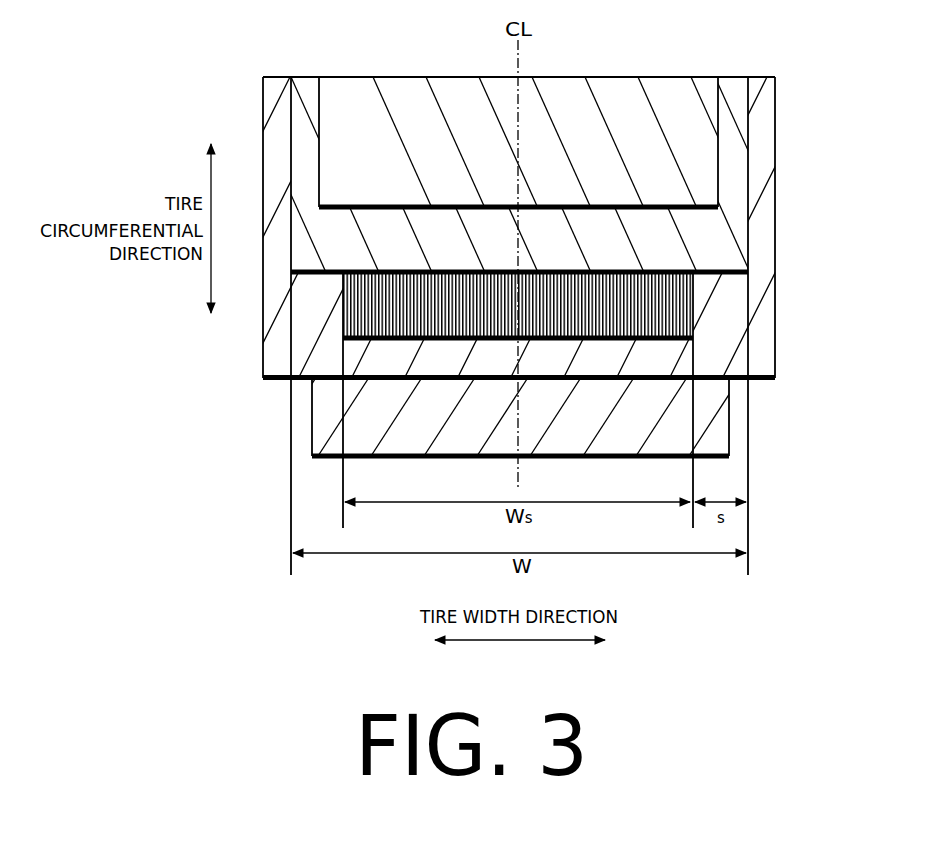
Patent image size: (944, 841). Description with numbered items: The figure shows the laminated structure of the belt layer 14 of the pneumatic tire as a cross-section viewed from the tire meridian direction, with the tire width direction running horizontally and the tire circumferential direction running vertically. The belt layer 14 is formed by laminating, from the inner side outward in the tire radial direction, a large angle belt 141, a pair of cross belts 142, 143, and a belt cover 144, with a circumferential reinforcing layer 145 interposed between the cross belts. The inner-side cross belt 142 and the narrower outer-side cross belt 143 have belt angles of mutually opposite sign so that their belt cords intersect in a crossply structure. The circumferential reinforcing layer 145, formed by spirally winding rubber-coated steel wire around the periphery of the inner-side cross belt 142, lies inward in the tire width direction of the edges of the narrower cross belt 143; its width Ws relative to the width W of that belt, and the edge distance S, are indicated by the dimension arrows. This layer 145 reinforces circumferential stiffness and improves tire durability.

The belt layer 14 is at (769, 48).
The large angle belt 141 is at (729, 418).
The inner-side cross belt 142 is at (775, 350).
The outer-side cross belt 143 is at (748, 235).
The belt cover 144 is at (718, 180).
The circumferential reinforcing layer 145 is at (693, 305).